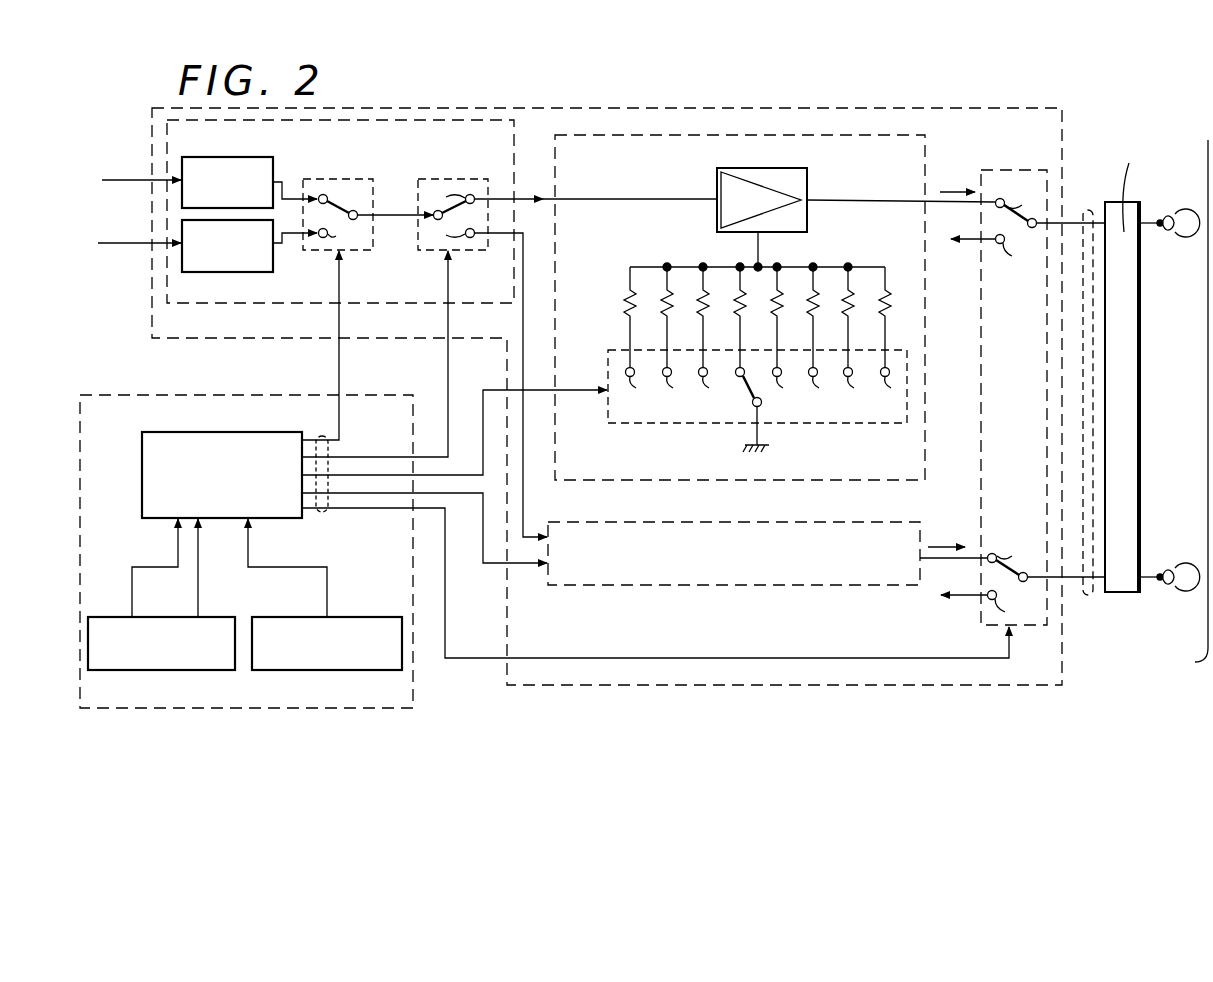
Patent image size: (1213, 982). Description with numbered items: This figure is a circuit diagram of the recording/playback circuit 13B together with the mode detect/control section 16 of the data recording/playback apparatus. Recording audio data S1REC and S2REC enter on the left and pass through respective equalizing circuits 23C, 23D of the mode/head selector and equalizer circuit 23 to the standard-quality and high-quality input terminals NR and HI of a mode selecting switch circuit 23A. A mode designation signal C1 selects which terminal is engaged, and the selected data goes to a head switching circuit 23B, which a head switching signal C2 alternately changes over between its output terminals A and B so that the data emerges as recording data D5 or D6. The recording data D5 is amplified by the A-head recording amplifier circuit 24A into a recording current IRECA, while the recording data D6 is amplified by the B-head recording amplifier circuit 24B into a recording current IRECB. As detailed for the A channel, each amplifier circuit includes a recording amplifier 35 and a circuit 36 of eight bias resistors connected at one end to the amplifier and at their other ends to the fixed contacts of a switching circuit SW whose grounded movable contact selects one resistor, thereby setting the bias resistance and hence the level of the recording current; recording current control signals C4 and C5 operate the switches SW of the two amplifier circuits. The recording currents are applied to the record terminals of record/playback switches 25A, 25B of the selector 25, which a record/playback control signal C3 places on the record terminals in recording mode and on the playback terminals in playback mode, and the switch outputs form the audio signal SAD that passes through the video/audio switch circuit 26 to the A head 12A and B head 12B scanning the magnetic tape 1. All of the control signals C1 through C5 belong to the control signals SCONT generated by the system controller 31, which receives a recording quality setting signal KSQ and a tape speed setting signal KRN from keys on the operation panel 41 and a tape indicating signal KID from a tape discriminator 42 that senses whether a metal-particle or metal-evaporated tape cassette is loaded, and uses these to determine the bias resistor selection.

The magnetic tape 1 is at (1203, 362).
The A head 12A is at (1182, 238).
The B head 12B is at (1182, 592).
The recording/playback circuit 13B is at (1064, 690).
The mode detect/control section 16 is at (234, 712).
The mode/head selector and equalizer circuit 23 is at (185, 305).
The mode selecting switch circuit 23A is at (340, 179).
The head switching circuit 23B is at (456, 179).
The equalizing circuit 23C is at (230, 157).
The equalizing circuit 23D is at (225, 272).
The A-head recording amplifier circuit 24A is at (628, 483).
The B-head recording amplifier circuit 24B is at (628, 588).
The selector 25 is at (990, 628).
The record/playback switch 25A is at (1010, 278).
The record/playback switch circuit 25B is at (1010, 526).
The video/audio switch circuit 26 is at (1116, 595).
The system controller 31 is at (250, 432).
The recording amplifier 35 is at (745, 168).
The bias resistance circuit 36 is at (684, 264).
The operation panel 41 is at (170, 670).
The tape discriminator 42 is at (335, 670).
The switching circuit SW is at (826, 425).
The mode designation signal C1 is at (341, 280).
The head switching signal C2 is at (450, 280).
The record/playback control signal C3 is at (1011, 654).
The recording current control signal C4 is at (577, 388).
The recording current control signal C5 is at (519, 566).
The recording data D5 is at (531, 196).
The recording data D6 is at (525, 500).
The recording audio data S1REC is at (131, 180).
The recording audio data S2REC is at (128, 253).
The recording current IRECA is at (951, 190).
The recording current IRECB is at (943, 545).
The audio signal SAD is at (1088, 212).
The control signals SCONT is at (324, 512).
The tape speed setting signal KRN is at (144, 565).
The recording quality setting signal KSQ is at (200, 592).
The tape indicating signal KID is at (329, 592).